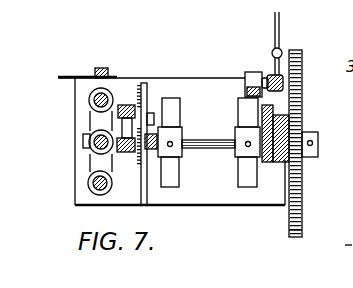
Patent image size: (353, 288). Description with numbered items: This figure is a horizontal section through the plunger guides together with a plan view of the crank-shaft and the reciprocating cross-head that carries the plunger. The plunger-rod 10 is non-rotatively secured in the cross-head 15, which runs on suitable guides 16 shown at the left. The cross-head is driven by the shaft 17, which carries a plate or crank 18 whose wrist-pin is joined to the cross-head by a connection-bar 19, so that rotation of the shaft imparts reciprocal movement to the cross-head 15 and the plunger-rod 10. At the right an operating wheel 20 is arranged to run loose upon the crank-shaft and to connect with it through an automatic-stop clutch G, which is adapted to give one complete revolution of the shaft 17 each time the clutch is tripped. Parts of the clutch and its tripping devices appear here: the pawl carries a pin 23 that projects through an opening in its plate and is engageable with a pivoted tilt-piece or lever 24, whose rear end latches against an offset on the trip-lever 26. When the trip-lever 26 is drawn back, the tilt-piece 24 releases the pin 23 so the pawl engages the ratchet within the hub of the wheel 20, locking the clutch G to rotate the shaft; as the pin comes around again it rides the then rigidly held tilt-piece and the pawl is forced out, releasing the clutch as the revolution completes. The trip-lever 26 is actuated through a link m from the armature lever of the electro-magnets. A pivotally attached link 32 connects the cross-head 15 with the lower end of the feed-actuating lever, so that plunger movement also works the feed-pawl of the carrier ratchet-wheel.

The plunger-rod 10 is at (90, 143).
The cross-head 15 is at (92, 130).
The guides 16 is at (89, 100).
The shaft 17 is at (205, 149).
The plate or crank 18 is at (148, 96).
The connection-bar 19 is at (128, 105).
The operating wheel 20 is at (296, 237).
The pin 23 is at (283, 145).
The tilt-piece or lever 24 is at (310, 100).
The trip-lever 26 is at (268, 82).
The link 32 is at (82, 78).
The link m is at (281, 31).
The automatic-stop clutch G is at (303, 156).